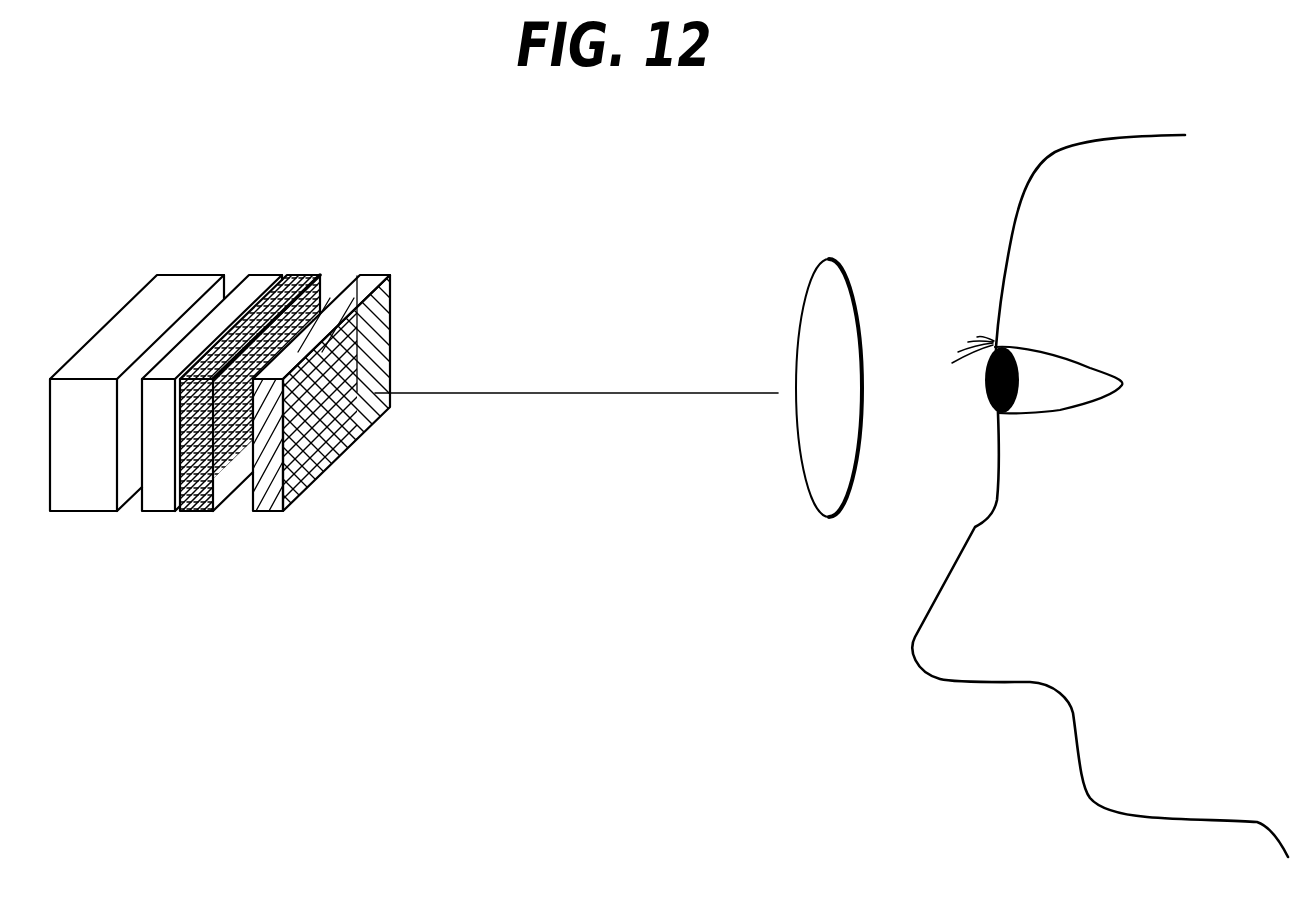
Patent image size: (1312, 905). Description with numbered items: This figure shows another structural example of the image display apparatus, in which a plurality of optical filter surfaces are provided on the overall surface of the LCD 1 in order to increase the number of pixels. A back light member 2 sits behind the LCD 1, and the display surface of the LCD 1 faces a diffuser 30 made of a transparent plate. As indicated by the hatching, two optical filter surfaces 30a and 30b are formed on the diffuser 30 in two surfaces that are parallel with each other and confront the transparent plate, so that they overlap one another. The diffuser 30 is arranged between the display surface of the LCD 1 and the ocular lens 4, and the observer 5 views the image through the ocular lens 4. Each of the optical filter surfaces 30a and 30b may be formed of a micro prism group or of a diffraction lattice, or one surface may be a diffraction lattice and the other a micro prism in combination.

The LCD 1 is at (186, 523).
The back light member 2 is at (124, 315).
The diffuser 30 is at (333, 407).
The optical filter surface 30a is at (335, 290).
The optical filter surface 30b is at (392, 305).
The ocular lens 4 is at (836, 258).
The observer 5 is at (1026, 184).